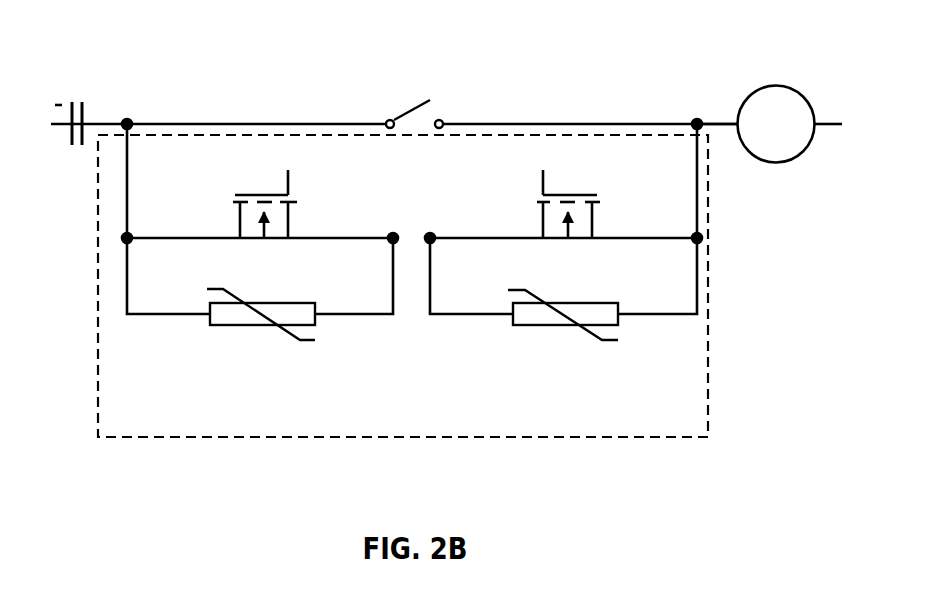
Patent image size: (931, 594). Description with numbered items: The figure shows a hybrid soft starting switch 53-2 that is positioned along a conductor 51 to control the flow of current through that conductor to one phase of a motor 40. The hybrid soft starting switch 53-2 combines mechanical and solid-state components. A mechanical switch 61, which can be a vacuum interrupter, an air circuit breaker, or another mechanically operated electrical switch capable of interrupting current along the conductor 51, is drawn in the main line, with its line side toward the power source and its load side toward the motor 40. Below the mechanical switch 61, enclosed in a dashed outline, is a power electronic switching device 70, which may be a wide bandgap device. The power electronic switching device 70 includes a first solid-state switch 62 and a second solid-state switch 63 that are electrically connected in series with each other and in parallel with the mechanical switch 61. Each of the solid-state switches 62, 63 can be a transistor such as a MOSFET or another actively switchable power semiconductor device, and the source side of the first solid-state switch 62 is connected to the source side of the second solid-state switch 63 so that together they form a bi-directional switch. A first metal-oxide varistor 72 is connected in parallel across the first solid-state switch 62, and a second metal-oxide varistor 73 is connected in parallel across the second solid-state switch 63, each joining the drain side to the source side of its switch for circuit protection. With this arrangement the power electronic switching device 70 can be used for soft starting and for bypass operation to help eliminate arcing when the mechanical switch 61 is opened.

The hybrid soft starting switch 53-2 is at (191, 46).
The conductor 51 is at (62, 128).
The mechanical switch 61 is at (407, 103).
The motor 40 is at (775, 84).
The power electronic switching device 70 is at (163, 438).
The first solid-state switch 62 is at (265, 177).
The second solid-state switch 63 is at (573, 177).
The first metal-oxide varistor 72 is at (235, 327).
The second metal-oxide varistor 73 is at (555, 327).